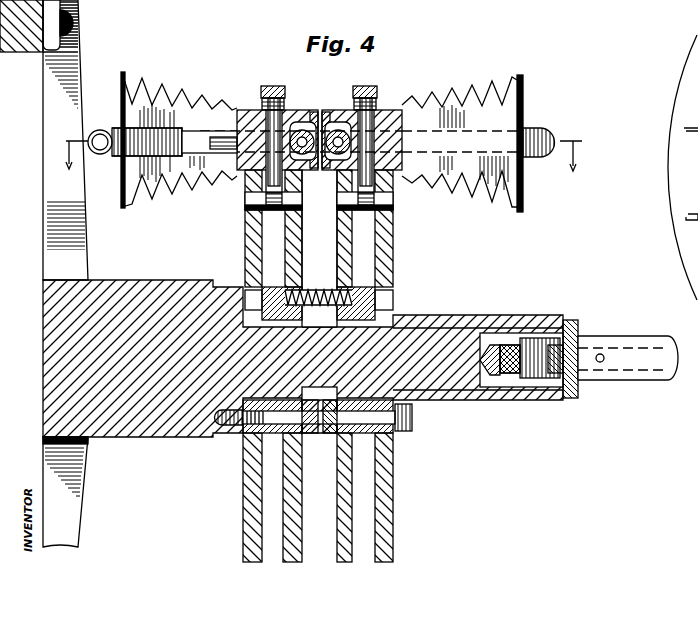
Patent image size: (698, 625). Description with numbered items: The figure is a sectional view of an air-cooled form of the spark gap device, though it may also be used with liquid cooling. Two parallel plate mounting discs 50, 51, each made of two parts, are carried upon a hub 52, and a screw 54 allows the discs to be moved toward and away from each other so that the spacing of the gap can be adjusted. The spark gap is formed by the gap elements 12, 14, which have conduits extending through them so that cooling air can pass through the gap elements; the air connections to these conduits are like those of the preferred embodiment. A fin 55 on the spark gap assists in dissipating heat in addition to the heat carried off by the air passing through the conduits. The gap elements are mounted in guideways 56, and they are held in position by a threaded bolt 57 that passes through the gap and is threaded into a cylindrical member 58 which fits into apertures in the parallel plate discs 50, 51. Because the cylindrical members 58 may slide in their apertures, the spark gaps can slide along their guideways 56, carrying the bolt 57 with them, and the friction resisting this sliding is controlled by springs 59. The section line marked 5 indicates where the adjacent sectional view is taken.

The section line 5- 5 is at (321, 169).
The gap element 12 is at (402, 124).
The gap element 14 is at (237, 117).
The mounting disc 50 is at (245, 247).
The mounting disc 51 is at (393, 252).
The hub 52 is at (168, 430).
The screw 54 is at (543, 315).
The fin 55 is at (497, 115).
The guideway 56 is at (298, 115).
The threaded bolt 57 is at (270, 86).
The cylindrical member 58 is at (245, 205).
The spring 59 is at (262, 103).